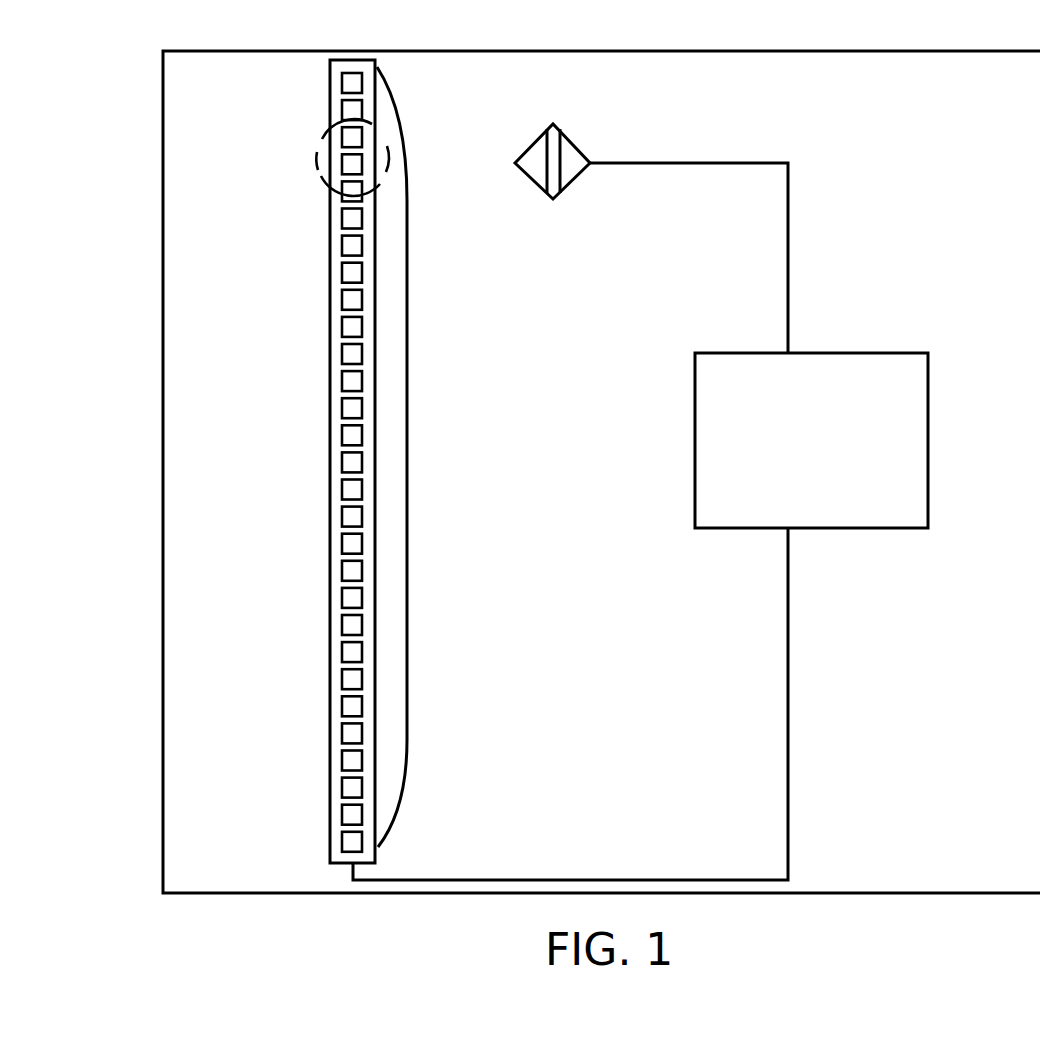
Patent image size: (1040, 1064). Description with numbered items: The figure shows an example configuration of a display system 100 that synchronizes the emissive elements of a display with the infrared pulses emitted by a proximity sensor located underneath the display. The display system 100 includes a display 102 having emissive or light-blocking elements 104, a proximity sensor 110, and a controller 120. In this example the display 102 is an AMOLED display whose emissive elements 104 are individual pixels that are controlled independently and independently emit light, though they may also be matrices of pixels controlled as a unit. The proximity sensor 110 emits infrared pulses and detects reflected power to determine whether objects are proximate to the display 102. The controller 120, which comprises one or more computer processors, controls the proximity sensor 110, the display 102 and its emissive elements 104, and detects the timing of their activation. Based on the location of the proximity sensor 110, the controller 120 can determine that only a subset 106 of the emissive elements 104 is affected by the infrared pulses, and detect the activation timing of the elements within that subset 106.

The display system 100 is at (147, 807).
The display 102 is at (328, 500).
The emissive elements 104 is at (408, 462).
The subset of emissive elements 106 is at (319, 173).
The proximity sensor 110 is at (580, 150).
The controller 120 is at (780, 463).